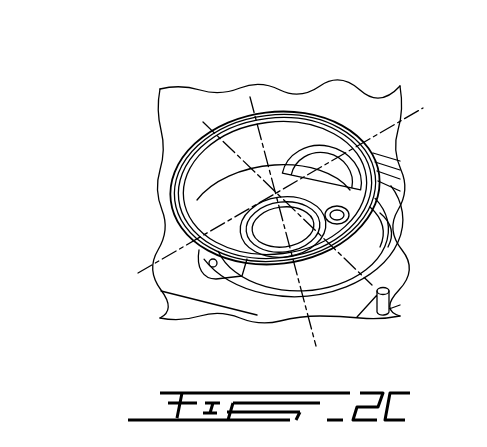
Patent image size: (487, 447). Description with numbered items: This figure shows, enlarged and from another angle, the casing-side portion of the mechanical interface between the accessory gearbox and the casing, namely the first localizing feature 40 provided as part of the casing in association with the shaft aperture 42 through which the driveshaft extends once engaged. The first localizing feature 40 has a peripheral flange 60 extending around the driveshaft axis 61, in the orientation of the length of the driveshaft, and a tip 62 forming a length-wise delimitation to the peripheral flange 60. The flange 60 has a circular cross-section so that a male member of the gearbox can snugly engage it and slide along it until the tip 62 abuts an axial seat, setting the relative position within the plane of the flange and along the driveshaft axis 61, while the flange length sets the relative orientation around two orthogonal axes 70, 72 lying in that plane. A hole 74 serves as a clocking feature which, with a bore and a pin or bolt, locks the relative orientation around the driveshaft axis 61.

The first localizing feature 40 is at (273, 182).
The peripheral flange 60 is at (235, 152).
The tip 62 is at (197, 153).
The shaft aperture 42 is at (203, 188).
The orthogonal axis 70 is at (328, 160).
The orthogonal axis 72 is at (372, 277).
The hole 74 is at (205, 264).
The driveshaft axis 61 is at (310, 336).